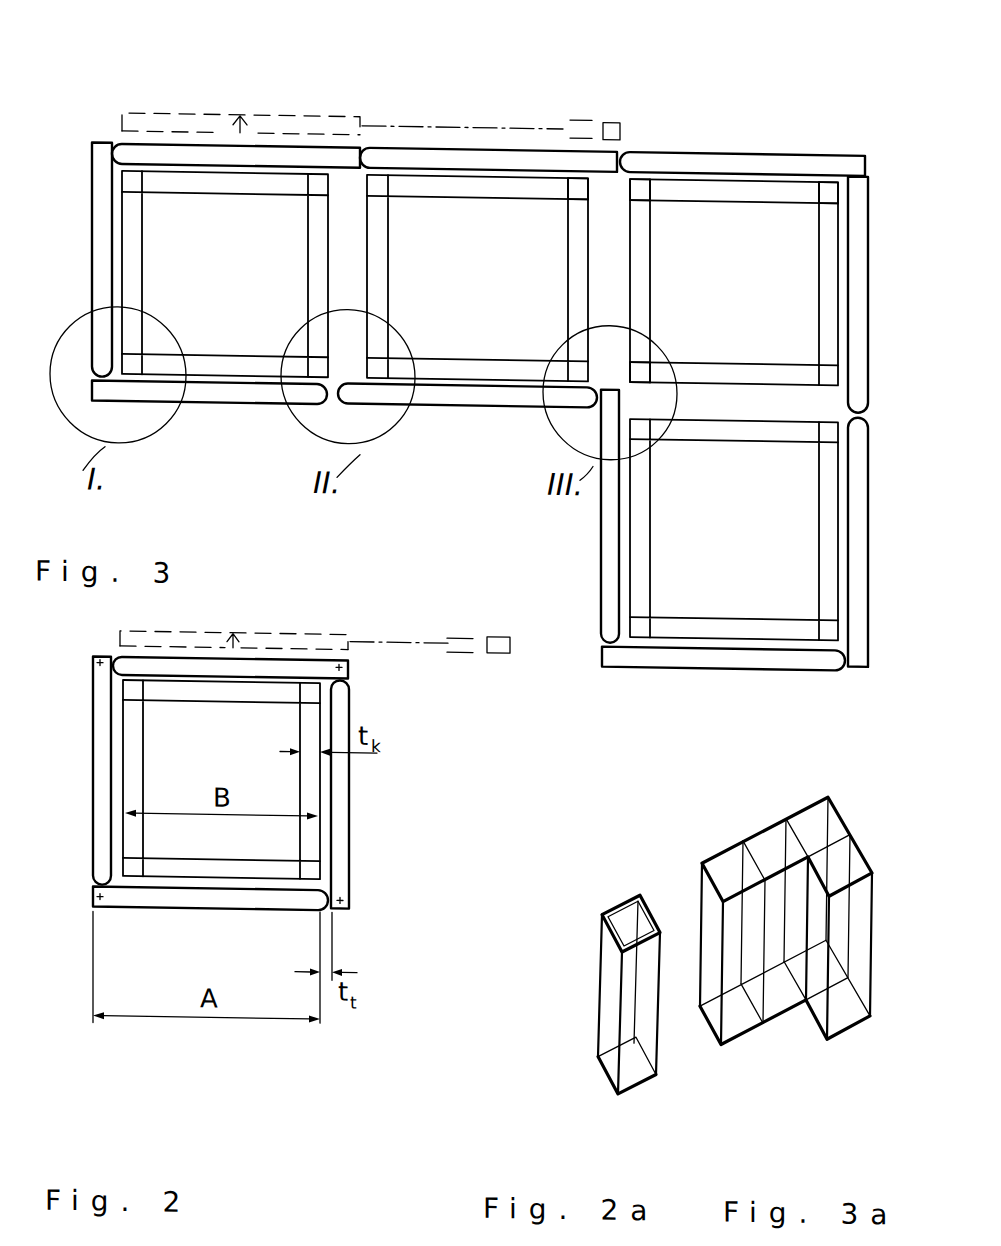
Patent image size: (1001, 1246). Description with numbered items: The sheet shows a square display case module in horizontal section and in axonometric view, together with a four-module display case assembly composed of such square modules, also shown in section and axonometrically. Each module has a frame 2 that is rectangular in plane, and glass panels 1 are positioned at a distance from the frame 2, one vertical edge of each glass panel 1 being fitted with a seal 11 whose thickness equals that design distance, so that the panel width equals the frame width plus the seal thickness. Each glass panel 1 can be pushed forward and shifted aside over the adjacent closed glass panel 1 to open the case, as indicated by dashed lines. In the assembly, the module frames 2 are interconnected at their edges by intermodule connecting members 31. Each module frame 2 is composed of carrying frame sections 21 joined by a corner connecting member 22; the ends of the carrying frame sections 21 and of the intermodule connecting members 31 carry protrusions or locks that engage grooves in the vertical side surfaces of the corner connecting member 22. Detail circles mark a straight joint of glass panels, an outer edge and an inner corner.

In FIG. 3, the glass panel 1 is at (480, 380).
In FIG. 2, the glass panel 1 is at (276, 740).
In FIG. 3, the seal 11 is at (360, 139).
In FIG. 2, the seal 11 is at (348, 676).
In FIG. 3, the frame 2 is at (501, 336).
In FIG. 2, the frame 2 is at (307, 798).
In FIG. 3, the carrying frame section 21 is at (728, 178).
In FIG. 3, the corner connecting member 22 is at (577, 173).
In FIG. 3, the intermodule connecting member 31 is at (312, 380).